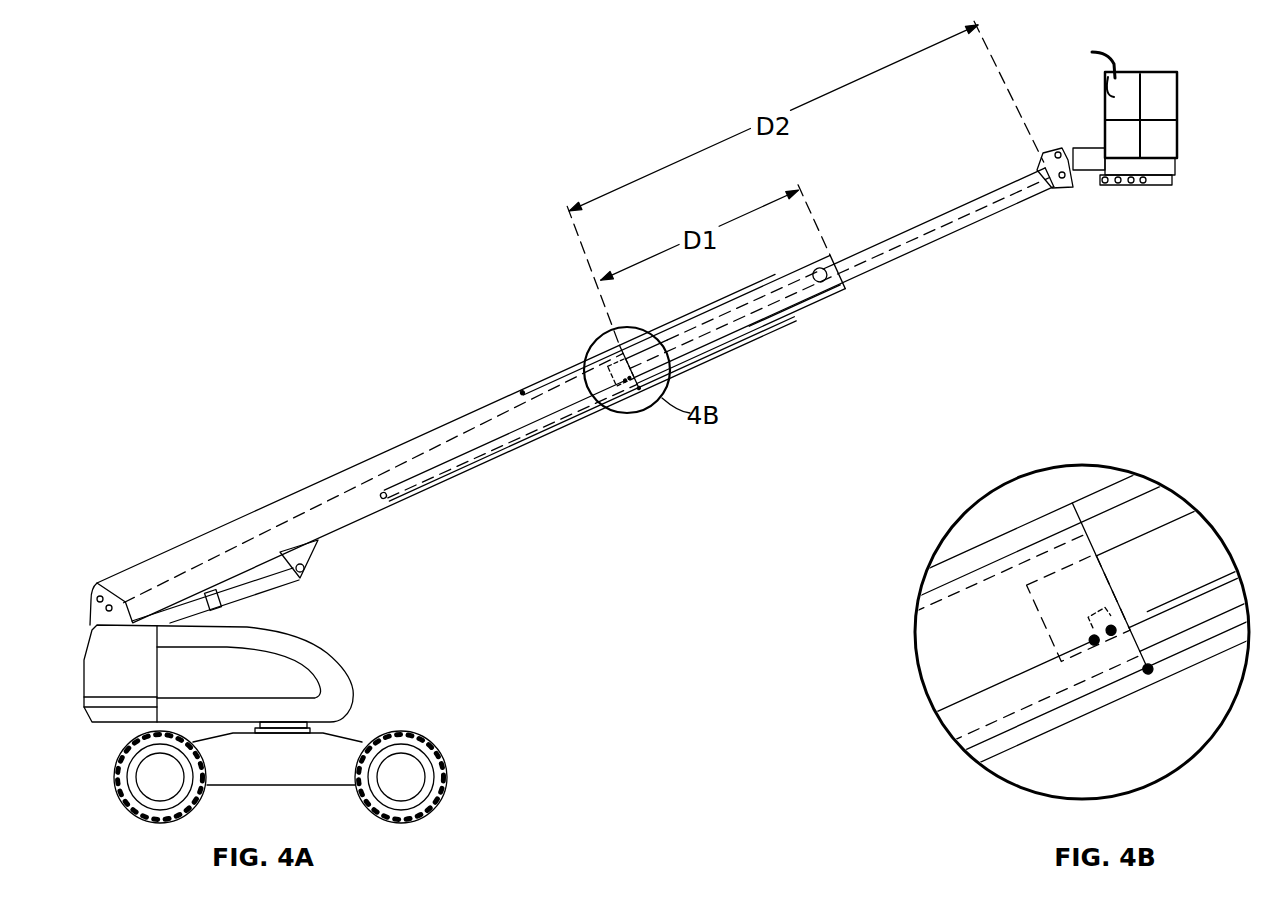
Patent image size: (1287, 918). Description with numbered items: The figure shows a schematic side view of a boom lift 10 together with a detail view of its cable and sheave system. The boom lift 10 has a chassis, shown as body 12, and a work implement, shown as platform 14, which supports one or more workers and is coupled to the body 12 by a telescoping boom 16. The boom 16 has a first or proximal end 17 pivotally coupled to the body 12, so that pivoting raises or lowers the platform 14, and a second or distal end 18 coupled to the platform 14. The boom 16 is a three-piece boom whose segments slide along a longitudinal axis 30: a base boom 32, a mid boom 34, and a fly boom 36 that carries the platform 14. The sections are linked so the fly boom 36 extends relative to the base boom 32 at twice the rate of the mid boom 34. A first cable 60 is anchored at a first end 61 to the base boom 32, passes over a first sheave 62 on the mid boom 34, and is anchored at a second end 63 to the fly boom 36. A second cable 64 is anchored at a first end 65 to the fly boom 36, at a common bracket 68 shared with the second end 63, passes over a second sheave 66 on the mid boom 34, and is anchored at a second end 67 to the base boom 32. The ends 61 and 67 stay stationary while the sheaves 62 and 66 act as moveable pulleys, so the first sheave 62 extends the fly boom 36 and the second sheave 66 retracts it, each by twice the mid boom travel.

In FIG. 4A, the boom lift 10 is at (604, 437).
In FIG. 4A, the body 12 is at (374, 653).
In FIG. 4A, the platform 14 is at (1160, 188).
In FIG. 4A, the boom 16 is at (575, 396).
In FIG. 4A, the first end 17 is at (78, 555).
In FIG. 4A, the second end 18 is at (1058, 216).
In FIG. 4A, the longitudinal axis 30 is at (220, 558).
In FIG. 4A, the base boom 32 is at (268, 500).
In FIG. 4B, the base boom 32 is at (968, 552).
In FIG. 4A, the mid boom 34 is at (795, 268).
In FIG. 4B, the mid boom 34 is at (1193, 637).
In FIG. 4A, the fly boom 36 is at (930, 222).
In FIG. 4B, the fly boom 36 is at (1113, 548).
In FIG. 4A, the first cable 60 is at (775, 314).
In FIG. 4B, the first cable 60 is at (1183, 593).
In FIG. 4A, the first end 61 is at (538, 378).
In FIG. 4A, the first sheave 62 is at (826, 284).
In FIG. 4B, the second end 63 is at (1117, 622).
In FIG. 4A, the second cable 64 is at (493, 448).
In FIG. 4B, the second cable 64 is at (1035, 717).
In FIG. 4B, the first end 65 is at (1063, 650).
In FIG. 4A, the second sheave 66 is at (383, 500).
In FIG. 4B, the second end 67 is at (1133, 677).
In FIG. 4B, the common bracket 68 is at (1090, 622).